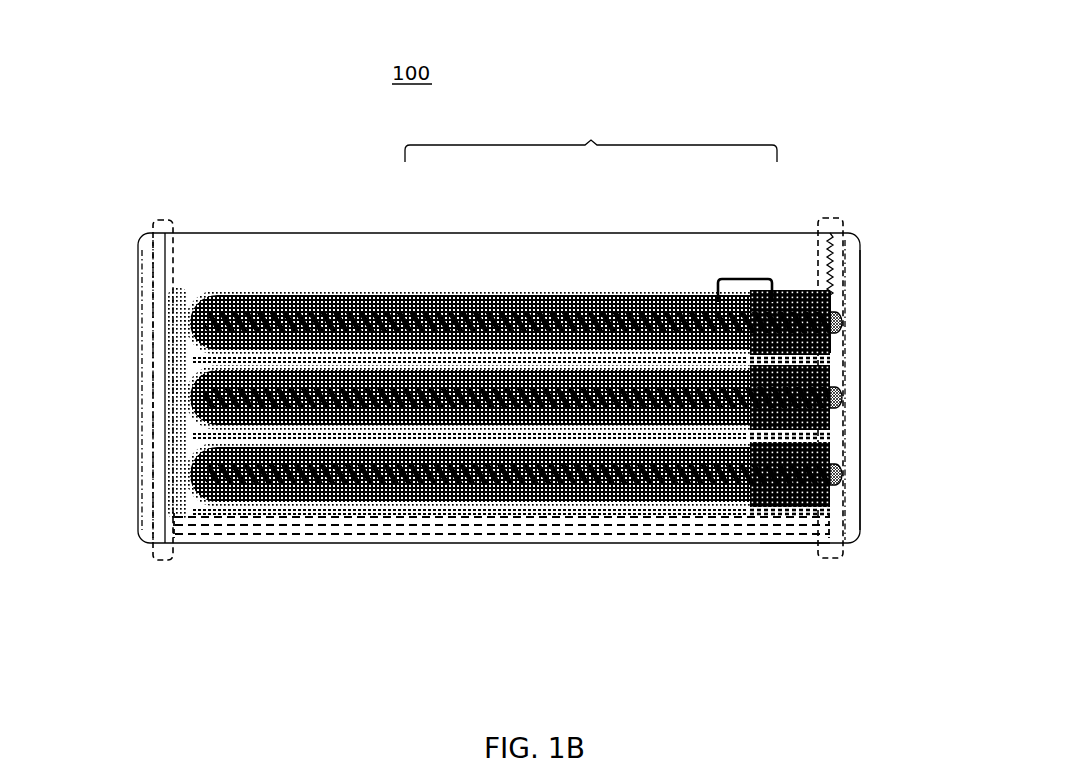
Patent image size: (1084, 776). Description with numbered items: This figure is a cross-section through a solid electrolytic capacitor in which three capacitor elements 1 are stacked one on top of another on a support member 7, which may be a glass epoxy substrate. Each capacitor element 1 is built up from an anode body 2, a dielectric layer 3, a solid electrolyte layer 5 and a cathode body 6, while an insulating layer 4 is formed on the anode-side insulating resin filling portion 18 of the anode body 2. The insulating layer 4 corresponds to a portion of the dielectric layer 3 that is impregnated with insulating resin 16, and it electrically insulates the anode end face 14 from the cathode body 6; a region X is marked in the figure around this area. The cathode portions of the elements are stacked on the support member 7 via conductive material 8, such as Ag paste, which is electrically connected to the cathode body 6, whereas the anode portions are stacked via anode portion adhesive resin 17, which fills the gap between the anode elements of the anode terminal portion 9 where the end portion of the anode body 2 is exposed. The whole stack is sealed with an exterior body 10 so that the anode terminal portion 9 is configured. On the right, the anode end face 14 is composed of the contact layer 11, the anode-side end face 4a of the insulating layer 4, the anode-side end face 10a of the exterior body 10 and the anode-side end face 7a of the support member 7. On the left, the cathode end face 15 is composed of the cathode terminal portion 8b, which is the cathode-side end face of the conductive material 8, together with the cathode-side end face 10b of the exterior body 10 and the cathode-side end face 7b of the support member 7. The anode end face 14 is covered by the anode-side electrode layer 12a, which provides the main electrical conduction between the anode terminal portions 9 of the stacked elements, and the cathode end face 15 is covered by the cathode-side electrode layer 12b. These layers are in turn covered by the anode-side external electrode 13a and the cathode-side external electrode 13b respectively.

The capacitor element 1 is at (592, 140).
The anode body 2 is at (695, 318).
The dielectric layer 3 is at (641, 313).
The insulating layer 4 is at (788, 292).
The anode-side end face of insulating layer 4a is at (832, 306).
The solid electrolyte layer 5 is at (555, 297).
The cathode body 6 is at (484, 291).
The support member 7 is at (657, 527).
The anode-side end face of supporting member 7a is at (832, 530).
The cathode-side end face of supporting member 7b is at (165, 535).
The conductive material 8 is at (178, 330).
The cathode terminal portion 8b is at (172, 388).
The anode terminal portion 9 is at (836, 470).
The exterior body 10 is at (230, 257).
The anode-side end face of exterior body 10a is at (832, 268).
The cathode-side end face of exterior body 10b is at (165, 283).
The contact layer 11 is at (842, 398).
The anode-side electrode layer 12a is at (848, 258).
The cathode-side electrode layer 12b is at (150, 258).
The anode-side external electrode 13a is at (862, 412).
The cathode-side external electrode 13b is at (140, 450).
The anode end face 14 is at (833, 218).
The cathode end face 15 is at (165, 218).
The insulating resin 16 is at (810, 300).
The anode portion adhesive resin 17 is at (808, 364).
The anode-side insulating resin filling portion 18 is at (790, 536).
The enlarged region X is at (722, 279).